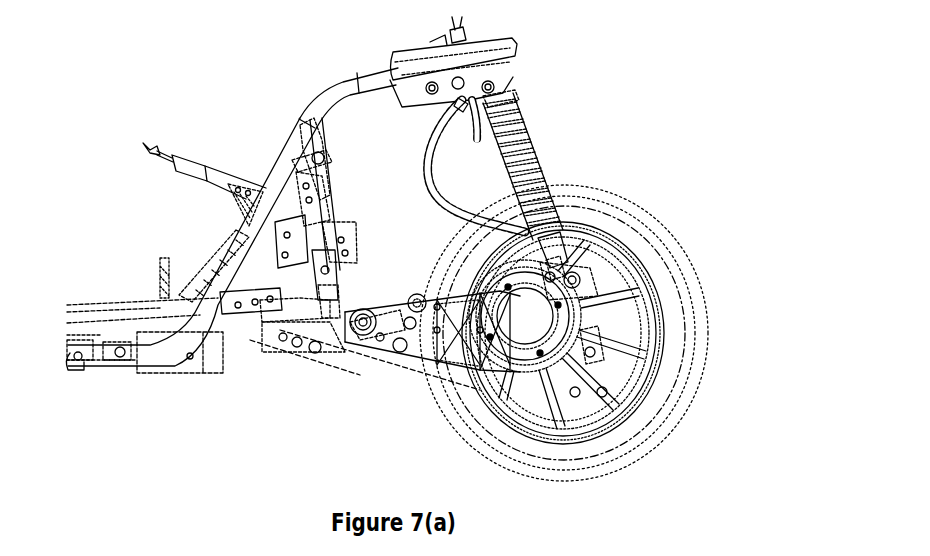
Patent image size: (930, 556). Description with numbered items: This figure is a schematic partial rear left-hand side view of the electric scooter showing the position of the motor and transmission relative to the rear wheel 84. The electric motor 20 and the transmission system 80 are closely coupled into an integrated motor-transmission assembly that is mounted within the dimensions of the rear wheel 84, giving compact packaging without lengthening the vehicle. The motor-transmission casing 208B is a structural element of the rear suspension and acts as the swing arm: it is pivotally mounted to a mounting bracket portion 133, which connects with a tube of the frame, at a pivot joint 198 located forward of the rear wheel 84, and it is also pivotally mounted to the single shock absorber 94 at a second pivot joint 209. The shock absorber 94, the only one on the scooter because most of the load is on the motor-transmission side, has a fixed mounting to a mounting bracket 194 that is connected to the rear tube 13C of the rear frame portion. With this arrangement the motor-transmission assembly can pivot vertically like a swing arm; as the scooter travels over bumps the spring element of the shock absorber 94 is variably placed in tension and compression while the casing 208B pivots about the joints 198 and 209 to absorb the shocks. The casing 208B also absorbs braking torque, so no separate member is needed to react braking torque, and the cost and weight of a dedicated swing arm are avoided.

The mounting bracket 194 is at (510, 60).
The rear tube 13C is at (457, 80).
The shock absorber 94 is at (543, 127).
The pivot joint 209 is at (578, 248).
The rear wheel 84 is at (680, 291).
The transmission system 80 is at (600, 326).
The motor-transmission casing 208B is at (432, 356).
The mounting bracket portion 133 is at (302, 317).
The pivot joint 198 is at (340, 325).
The electric motor 20 is at (523, 366).